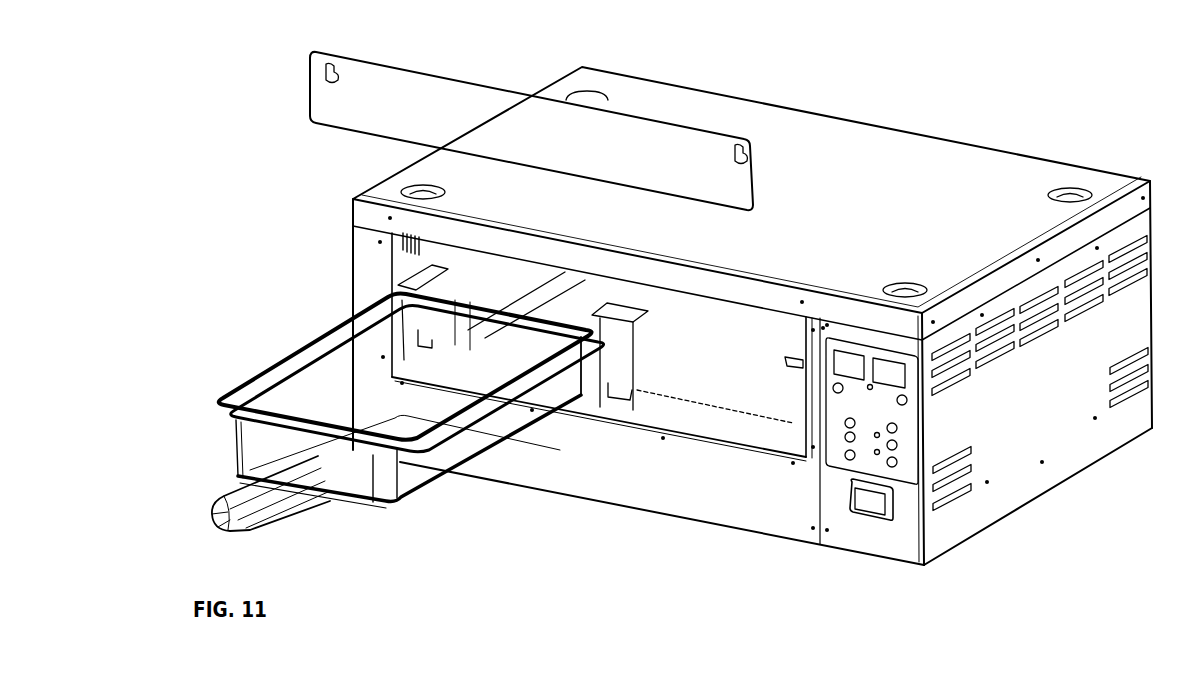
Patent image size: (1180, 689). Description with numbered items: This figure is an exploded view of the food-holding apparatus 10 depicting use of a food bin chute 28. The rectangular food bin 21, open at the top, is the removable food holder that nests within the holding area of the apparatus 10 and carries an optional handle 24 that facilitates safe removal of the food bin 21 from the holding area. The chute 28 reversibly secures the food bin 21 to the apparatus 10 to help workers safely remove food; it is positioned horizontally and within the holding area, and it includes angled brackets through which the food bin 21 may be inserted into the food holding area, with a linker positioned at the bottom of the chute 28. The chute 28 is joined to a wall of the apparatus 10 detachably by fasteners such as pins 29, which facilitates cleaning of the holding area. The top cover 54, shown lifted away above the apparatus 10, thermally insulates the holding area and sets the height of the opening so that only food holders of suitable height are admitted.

The apparatus 10 is at (999, 174).
The food bin 21 is at (420, 480).
The handle 24 is at (262, 500).
The food bin chute 28 is at (622, 366).
The pins 29 is at (394, 332).
The top cover 54 is at (372, 103).